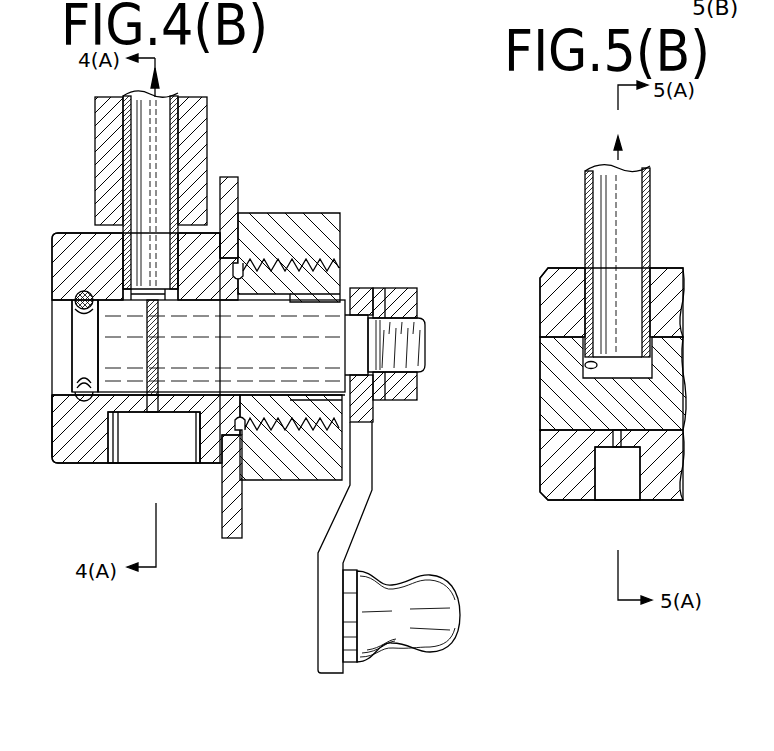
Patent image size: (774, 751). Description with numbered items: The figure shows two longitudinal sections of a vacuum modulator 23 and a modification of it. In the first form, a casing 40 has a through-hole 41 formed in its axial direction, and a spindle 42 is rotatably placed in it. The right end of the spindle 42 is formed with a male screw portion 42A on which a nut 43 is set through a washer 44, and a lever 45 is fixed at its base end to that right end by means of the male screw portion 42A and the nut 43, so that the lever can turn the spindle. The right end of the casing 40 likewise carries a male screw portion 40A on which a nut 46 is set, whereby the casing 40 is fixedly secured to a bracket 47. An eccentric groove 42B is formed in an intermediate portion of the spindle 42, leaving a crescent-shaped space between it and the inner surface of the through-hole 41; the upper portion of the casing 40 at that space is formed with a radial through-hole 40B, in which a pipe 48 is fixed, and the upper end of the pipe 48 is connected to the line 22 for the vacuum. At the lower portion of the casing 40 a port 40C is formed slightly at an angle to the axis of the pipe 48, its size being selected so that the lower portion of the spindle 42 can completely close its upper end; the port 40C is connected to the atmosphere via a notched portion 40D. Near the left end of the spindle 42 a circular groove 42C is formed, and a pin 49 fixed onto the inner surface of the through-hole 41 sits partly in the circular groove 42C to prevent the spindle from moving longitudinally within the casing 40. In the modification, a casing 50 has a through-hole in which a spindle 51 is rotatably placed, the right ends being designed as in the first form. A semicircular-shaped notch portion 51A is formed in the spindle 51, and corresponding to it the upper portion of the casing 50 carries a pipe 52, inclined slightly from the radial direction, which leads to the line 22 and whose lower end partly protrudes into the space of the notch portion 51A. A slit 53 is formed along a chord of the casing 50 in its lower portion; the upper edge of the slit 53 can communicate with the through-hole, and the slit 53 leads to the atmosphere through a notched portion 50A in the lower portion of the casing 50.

In FIG. 4B, the line 22 is at (150, 82).
In FIG. 5B, the line 22 is at (622, 136).
In FIG. 4B, the vacuum modulator 23 is at (94, 483).
In FIG. 5B, the vacuum modulator 23 is at (556, 512).
In FIG. 4B, the casing 40 is at (62, 270).
In FIG. 4B, the male screw portion 40A is at (313, 257).
In FIG. 4B, the radial through-hole 40B is at (112, 288).
In FIG. 4B, the port 40C is at (170, 400).
In FIG. 4B, the notched portion 40D is at (200, 437).
In FIG. 4B, the through-hole 41 is at (55, 412).
In FIG. 4B, the spindle 42 is at (322, 341).
In FIG. 4B, the male screw portion 42A is at (428, 334).
In FIG. 4B, the eccentric groove 42B is at (156, 348).
In FIG. 4B, the circular groove 42C is at (84, 330).
In FIG. 4B, the nut 43 is at (420, 296).
In FIG. 4B, the washer 44 is at (374, 408).
In FIG. 4B, the lever 45 is at (376, 470).
In FIG. 4B, the nut 46 is at (293, 222).
In FIG. 4B, the bracket 47 is at (222, 510).
In FIG. 4B, the pipe 48 is at (166, 125).
In FIG. 4B, the pin 49 is at (62, 318).
In FIG. 5B, the casing 50 is at (674, 268).
In FIG. 5B, the notched portion 50A is at (636, 492).
In FIG. 5B, the spindle 51 is at (672, 395).
In FIG. 5B, the notch portion 51A is at (590, 368).
In FIG. 5B, the pipe 52 is at (650, 201).
In FIG. 5B, the slit 53 is at (617, 450).